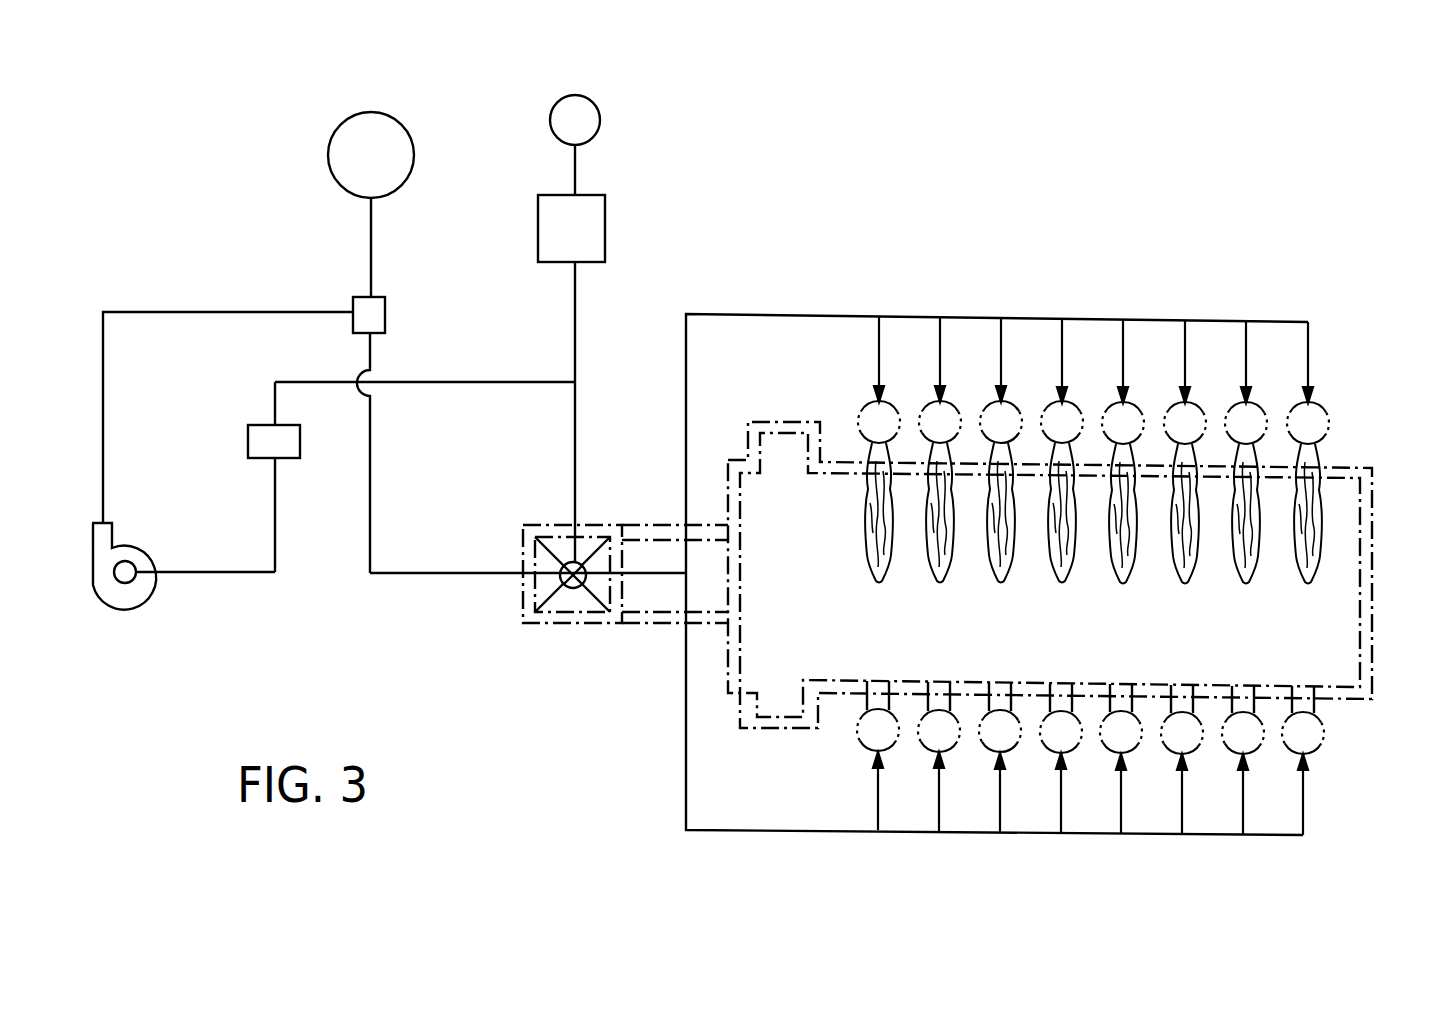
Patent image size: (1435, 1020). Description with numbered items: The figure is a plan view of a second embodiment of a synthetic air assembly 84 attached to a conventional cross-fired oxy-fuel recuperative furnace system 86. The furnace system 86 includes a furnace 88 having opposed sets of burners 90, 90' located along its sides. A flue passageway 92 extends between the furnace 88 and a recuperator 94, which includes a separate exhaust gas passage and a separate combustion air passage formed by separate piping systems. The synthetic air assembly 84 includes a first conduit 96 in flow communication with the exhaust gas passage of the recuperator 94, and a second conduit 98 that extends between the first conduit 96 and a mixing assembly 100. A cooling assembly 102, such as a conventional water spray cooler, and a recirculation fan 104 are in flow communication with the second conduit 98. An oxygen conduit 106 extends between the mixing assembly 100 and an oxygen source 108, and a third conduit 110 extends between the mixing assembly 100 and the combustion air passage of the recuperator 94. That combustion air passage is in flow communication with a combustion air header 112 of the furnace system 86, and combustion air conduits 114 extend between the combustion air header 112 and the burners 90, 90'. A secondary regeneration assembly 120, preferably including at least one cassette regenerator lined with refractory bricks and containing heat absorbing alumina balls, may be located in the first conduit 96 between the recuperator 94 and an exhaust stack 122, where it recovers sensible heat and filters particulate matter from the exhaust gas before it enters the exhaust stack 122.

The synthetic air assembly 84 is at (212, 252).
The cross-fired oxy-fuel recuperative furnace system 86 is at (1016, 172).
The furnace 88 is at (1069, 636).
The burners 90 is at (1098, 461).
The burners 90' is at (1084, 685).
The flue passageway 92 is at (647, 600).
The recuperator 94 is at (560, 592).
The first conduit 96 is at (577, 432).
The second conduit 98 is at (477, 382).
The mixing assembly 100 is at (385, 312).
The cooling assembly 102 is at (248, 437).
The recirculation fan 104 is at (125, 604).
The oxygen conduit 106 is at (372, 226).
The oxygen source 108 is at (395, 175).
The third conduit 110 is at (372, 432).
The combustion air header 112 is at (686, 337).
The combustion air conduits 114 is at (1001, 345).
The secondary regeneration assembly 120 is at (606, 228).
The exhaust stack 122 is at (600, 113).